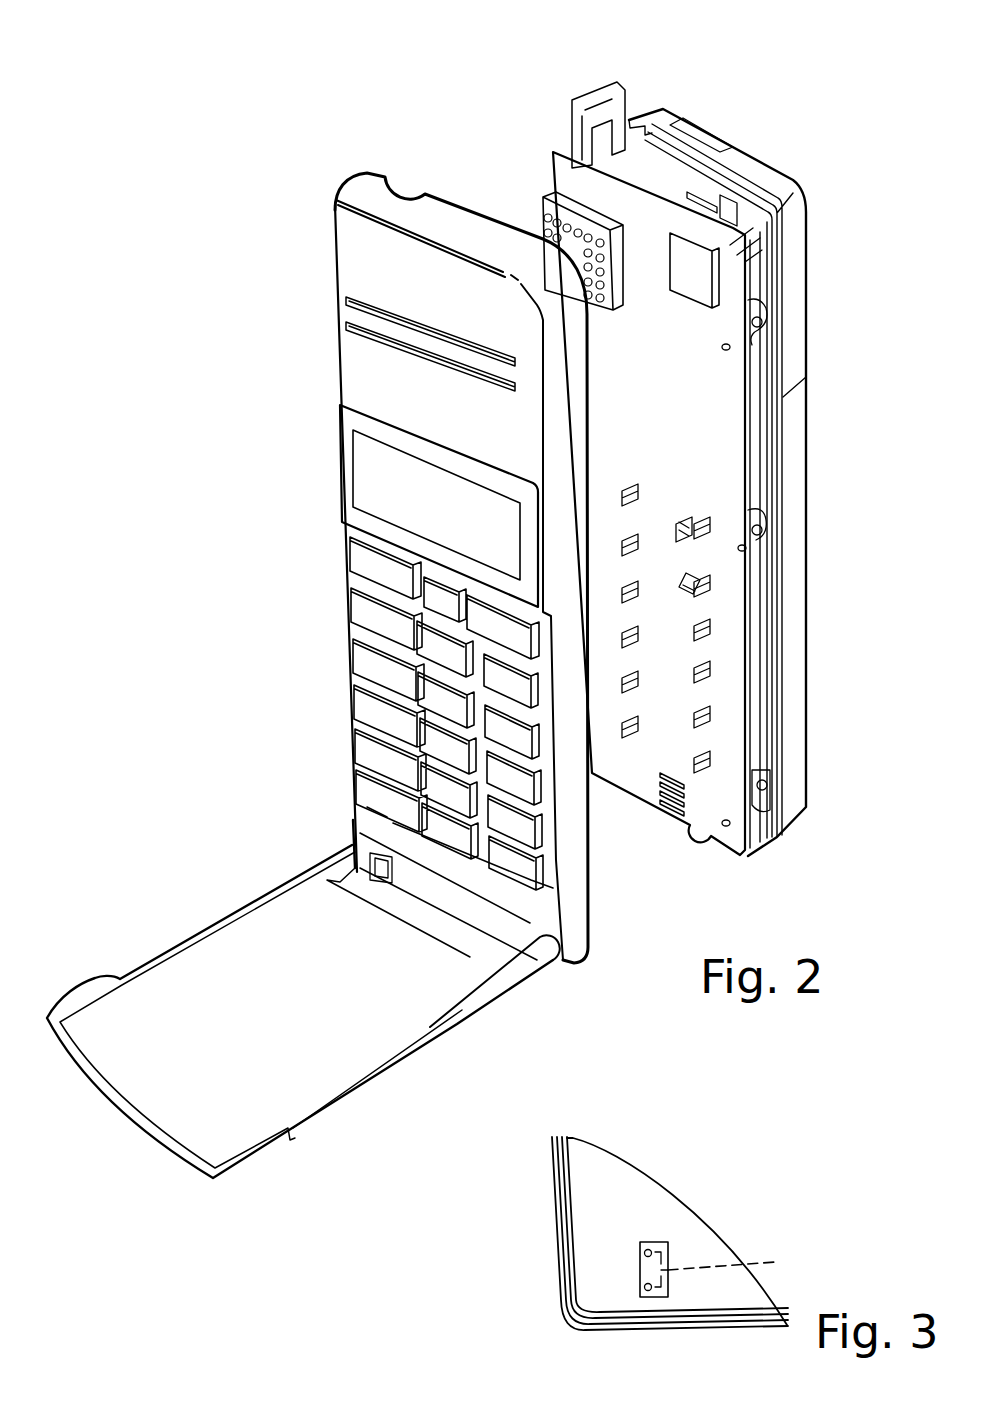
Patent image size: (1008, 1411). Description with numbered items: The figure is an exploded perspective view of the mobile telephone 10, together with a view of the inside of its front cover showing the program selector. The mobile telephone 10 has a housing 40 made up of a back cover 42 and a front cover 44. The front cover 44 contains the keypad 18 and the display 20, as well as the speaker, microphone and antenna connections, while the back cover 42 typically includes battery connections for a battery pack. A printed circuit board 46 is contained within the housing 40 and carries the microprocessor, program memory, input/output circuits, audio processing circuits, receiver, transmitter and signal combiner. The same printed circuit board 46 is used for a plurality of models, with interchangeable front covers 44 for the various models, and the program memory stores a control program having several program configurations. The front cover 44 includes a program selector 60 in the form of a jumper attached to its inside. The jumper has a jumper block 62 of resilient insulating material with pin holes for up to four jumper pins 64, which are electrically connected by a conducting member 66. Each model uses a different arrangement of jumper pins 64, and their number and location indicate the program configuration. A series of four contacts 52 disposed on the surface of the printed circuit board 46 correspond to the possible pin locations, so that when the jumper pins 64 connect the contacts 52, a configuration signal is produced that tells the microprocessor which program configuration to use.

In FIG. 2, the mobile telephone 10 is at (625, 0).
In FIG. 2, the keypad 18 is at (321, 698).
In FIG. 2, the display 20 is at (363, 468).
In FIG. 2, the housing 40 is at (299, 363).
In FIG. 2, the back cover 42 is at (808, 333).
In FIG. 2, the front cover 44 is at (350, 282).
In FIG. 2, the printed circuit board 46 is at (710, 443).
In FIG. 2, the contacts 52 is at (667, 787).
In FIG. 3, the program selector 60 is at (711, 1266).
In FIG. 3, the jumper block 62 is at (637, 1273).
In FIG. 3, the jumper pins 64 is at (640, 1252).
In FIG. 3, the conducting member 66 is at (743, 1261).